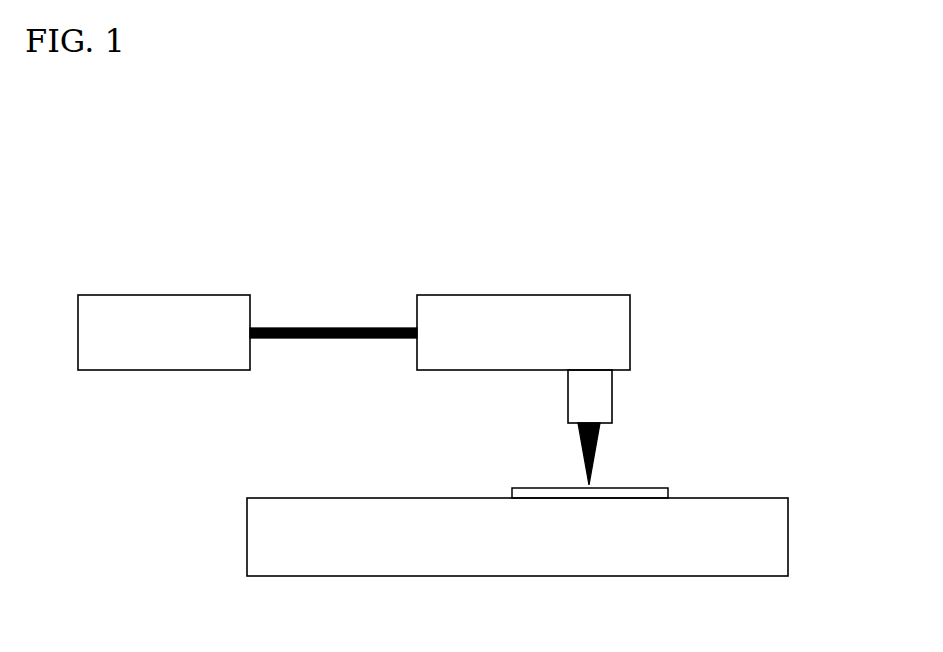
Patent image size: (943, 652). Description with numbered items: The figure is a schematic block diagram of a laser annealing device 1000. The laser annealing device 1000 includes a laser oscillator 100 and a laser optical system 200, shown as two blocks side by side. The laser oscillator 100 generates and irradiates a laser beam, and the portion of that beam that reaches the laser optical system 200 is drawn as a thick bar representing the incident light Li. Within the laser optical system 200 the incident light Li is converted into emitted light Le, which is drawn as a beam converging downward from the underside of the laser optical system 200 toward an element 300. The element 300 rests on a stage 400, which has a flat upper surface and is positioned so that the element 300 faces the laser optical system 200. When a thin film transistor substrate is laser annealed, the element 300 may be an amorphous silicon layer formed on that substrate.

The laser annealing device 1000 is at (712, 218).
The laser oscillator 100 is at (163, 295).
The incident light Li is at (332, 328).
The laser optical system 200 is at (523, 295).
The emitted light Le is at (595, 453).
The element 300 is at (662, 496).
The stage 400 is at (503, 565).